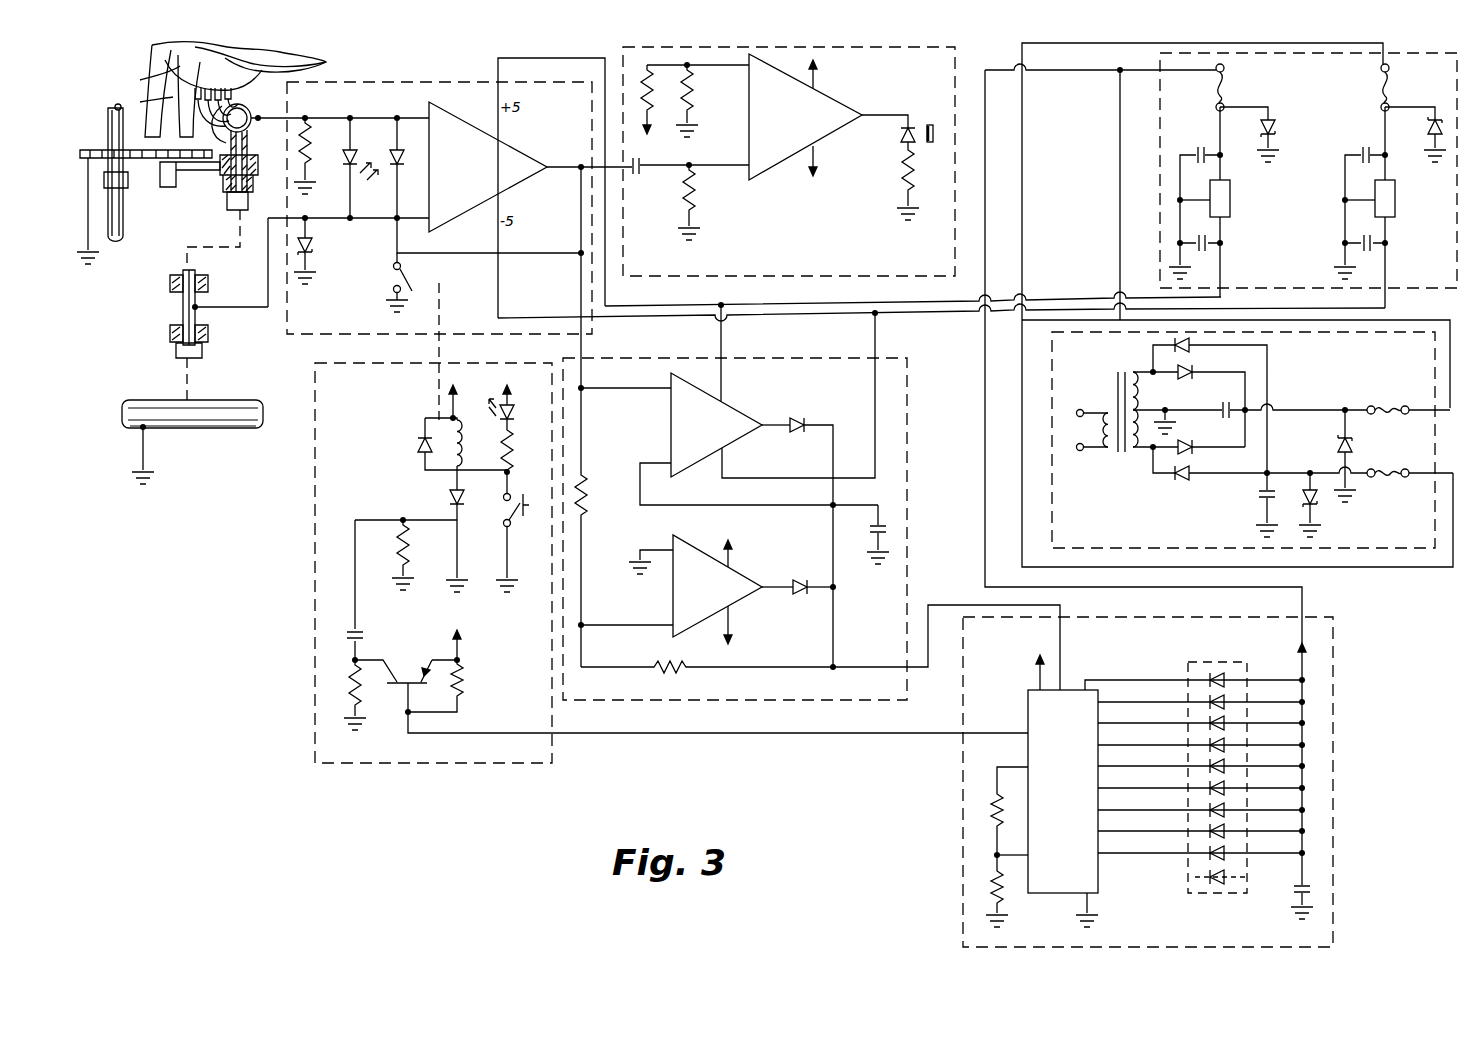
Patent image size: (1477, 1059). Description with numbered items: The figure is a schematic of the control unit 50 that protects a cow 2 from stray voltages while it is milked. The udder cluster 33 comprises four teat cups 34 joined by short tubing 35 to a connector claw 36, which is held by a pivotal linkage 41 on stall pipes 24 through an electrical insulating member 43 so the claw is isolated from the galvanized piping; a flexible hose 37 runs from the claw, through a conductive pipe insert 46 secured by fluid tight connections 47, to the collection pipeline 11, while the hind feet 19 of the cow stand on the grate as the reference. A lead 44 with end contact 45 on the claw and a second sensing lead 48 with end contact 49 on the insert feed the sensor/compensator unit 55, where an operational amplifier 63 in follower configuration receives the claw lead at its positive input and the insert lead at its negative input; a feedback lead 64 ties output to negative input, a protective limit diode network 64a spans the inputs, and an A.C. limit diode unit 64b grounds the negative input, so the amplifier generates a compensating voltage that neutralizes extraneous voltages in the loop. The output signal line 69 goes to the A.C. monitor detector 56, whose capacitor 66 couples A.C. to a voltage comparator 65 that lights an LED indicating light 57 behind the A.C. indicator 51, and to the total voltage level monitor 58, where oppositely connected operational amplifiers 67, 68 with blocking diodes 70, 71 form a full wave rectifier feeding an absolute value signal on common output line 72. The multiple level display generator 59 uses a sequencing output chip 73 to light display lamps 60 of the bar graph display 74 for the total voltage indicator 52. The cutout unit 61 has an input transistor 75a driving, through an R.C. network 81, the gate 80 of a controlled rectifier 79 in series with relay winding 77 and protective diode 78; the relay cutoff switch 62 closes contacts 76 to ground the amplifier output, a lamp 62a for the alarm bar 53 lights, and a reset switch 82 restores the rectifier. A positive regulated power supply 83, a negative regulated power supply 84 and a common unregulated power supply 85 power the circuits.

The cow 2 is at (310, 66).
The collection pipeline 11 is at (236, 428).
The hind feet 19 is at (160, 152).
The pipes 24 is at (126, 233).
The udder cluster 33 is at (252, 130).
The teat cups 34 is at (196, 92).
The short tubing 35 is at (208, 108).
The connector claw 36 is at (244, 135).
The flexible hose 37 is at (228, 206).
The pivotal linkage 41 is at (172, 180).
The electrical insulating member 43 is at (222, 172).
The lead 44 is at (300, 116).
The end contact 45 is at (278, 106).
The conductive pipe insert 46 is at (182, 300).
The fluid tight connection 47 is at (206, 280).
The second sensing lead 48 is at (265, 322).
The end contact 49 is at (200, 308).
The control unit 50 is at (848, 748).
The A.C. voltage compensating indicator 51 is at (933, 124).
The total voltage compensating indicator 52 is at (1217, 674).
The alarm bar 53 is at (497, 410).
The sensor/compensator unit 55 is at (439, 208).
The A.C. monitor detector 56 is at (789, 161).
The LED indicating light 57 is at (901, 134).
The total voltage level monitor 58 is at (735, 529).
The multiple level display generator 59 is at (1148, 782).
The display lamps 60 is at (1226, 682).
The cutout unit 61 is at (433, 563).
The relay cutoff switch 62 is at (440, 286).
The lamp 62a is at (515, 418).
The operational amplifier 63 is at (516, 152).
The feedback lead 64 is at (528, 253).
The protective limit diode network 64a is at (373, 168).
The A.C. limit diode unit 64b is at (320, 250).
The voltage comparator 65 is at (806, 170).
The capacitor 66 is at (638, 178).
The operational amplifier 67 is at (740, 410).
The operational amplifier 68 is at (744, 570).
The output signal line 69 is at (581, 347).
The blocking diode 70 is at (797, 432).
The blocking diode 71 is at (793, 600).
The common output line 72 is at (870, 665).
The sequencing output chip 73 is at (1098, 886).
The bar graph display 74 is at (1202, 897).
The input transistor 75a is at (410, 668).
The contacts 76 is at (394, 283).
The relay winding 77 is at (462, 462).
The protective diode 78 is at (418, 452).
The controlled rectifier 79 is at (449, 497).
The gate 80 is at (452, 522).
The R.C. network 81 is at (360, 628).
The reset switch 82 is at (510, 514).
The positive regulated power supply 83 is at (1232, 200).
The negative regulated power supply 84 is at (1397, 200).
The unregulated power supply 85 is at (1422, 550).